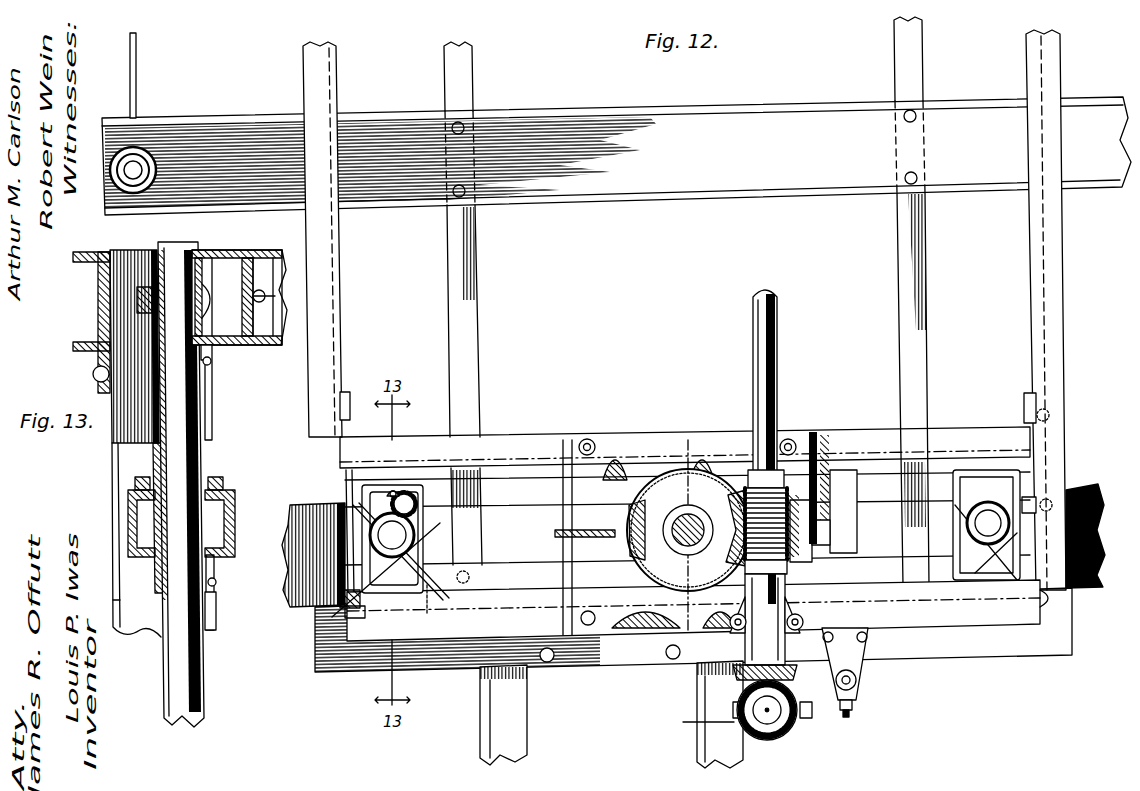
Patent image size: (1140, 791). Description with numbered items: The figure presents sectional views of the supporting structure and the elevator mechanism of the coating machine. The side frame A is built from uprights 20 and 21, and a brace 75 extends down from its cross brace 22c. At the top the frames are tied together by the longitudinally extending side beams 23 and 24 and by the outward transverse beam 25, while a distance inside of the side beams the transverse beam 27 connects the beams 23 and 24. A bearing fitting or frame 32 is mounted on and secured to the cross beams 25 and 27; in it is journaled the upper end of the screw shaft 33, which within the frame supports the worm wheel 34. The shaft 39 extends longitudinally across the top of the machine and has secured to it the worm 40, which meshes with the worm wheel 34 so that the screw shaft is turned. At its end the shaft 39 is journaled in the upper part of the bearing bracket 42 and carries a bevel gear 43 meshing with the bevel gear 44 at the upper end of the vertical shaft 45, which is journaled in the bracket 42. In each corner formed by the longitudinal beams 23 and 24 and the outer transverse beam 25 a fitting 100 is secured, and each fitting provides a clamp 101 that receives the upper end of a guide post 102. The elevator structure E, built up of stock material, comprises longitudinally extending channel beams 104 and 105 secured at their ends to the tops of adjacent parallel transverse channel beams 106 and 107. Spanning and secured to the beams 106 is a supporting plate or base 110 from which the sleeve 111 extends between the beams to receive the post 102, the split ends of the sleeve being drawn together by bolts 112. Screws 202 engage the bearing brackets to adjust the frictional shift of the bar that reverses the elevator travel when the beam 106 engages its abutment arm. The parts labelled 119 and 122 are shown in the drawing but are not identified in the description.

In FIG. 12, the upright 20 is at (290, 548).
In FIG. 13, the upright 20 is at (114, 483).
In FIG. 12, the upright 21 is at (1082, 496).
In FIG. 12, the cross brace 22c is at (1020, 650).
In FIG. 12, the longitudinally extending side beam 23 is at (1065, 335).
In FIG. 12, the longitudinally extending side beam 24 is at (320, 393).
In FIG. 12, the outward transverse beam 25 is at (980, 614).
In FIG. 13, the outward transverse beam 25 is at (93, 262).
In FIG. 12, the transverse beam 27 is at (863, 430).
In FIG. 12, the bearing fitting or frame 32 is at (620, 462).
In FIG. 12, the screw shaft 33 is at (682, 515).
In FIG. 12, the worm wheel 34 is at (745, 490).
In FIG. 12, the shaft 39 is at (778, 355).
In FIG. 12, the worm 40 is at (793, 495).
In FIG. 12, the bearing bracket 42 is at (758, 645).
In FIG. 12, the bevel gear 43 is at (748, 680).
In FIG. 12, the bevel gear 44 is at (793, 730).
In FIG. 12, the vertical shaft 45 is at (767, 716).
In FIG. 12, the brace 75 is at (693, 724).
In FIG. 12, the fitting 100 is at (348, 611).
In FIG. 13, the fitting 100 is at (205, 300).
In FIG. 12, the clamp 101 is at (356, 518).
In FIG. 12, the guide post 102 is at (340, 598).
In FIG. 13, the guide post 102 is at (180, 659).
In FIG. 12, the longitudinally extending channel beam 104 is at (478, 340).
In FIG. 12, the longitudinally extending channel beam 105 is at (925, 251).
In FIG. 12, the transverse channel beam 106 is at (520, 564).
In FIG. 13, the transverse channel beam 106 is at (128, 527).
In FIG. 12, the transverse channel beam 107 is at (541, 503).
In FIG. 13, the transverse channel beam 107 is at (237, 522).
In FIG. 12, the supporting plate or base 110 is at (407, 496).
In FIG. 13, the supporting plate or base 110 is at (225, 486).
In FIG. 13, the sleeve 111 is at (156, 566).
In FIG. 12, the bolt 112 is at (392, 486).
In FIG. 13, the bolt 112 is at (214, 362).
In FIG. 12, the top beam 119 is at (567, 123).
In FIG. 12, the bolt 122 is at (133, 170).
In FIG. 12, the screw 202 is at (853, 660).
In FIG. 12, the side frame A is at (1090, 588).
In FIG. 13, the side frame A is at (113, 600).
In FIG. 12, the elevator structure E is at (534, 206).